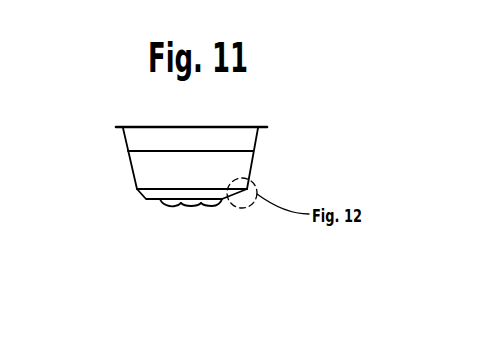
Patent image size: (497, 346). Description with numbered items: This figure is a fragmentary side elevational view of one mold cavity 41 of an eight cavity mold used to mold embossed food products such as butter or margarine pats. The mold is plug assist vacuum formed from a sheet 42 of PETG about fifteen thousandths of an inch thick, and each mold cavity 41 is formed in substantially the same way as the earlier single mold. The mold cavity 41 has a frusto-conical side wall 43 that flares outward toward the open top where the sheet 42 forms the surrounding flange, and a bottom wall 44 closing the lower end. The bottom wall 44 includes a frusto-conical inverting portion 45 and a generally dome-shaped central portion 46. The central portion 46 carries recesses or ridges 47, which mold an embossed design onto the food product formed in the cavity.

The mold cavity 41 is at (127, 167).
The sheet 42 is at (263, 127).
The frusto-conical side wall 43 is at (255, 158).
The bottom wall 44 is at (177, 206).
The frusto-conical inverting portion 45 is at (139, 201).
The dome-shaped central portion 46 is at (217, 206).
The recesses or ridges 47 is at (190, 208).